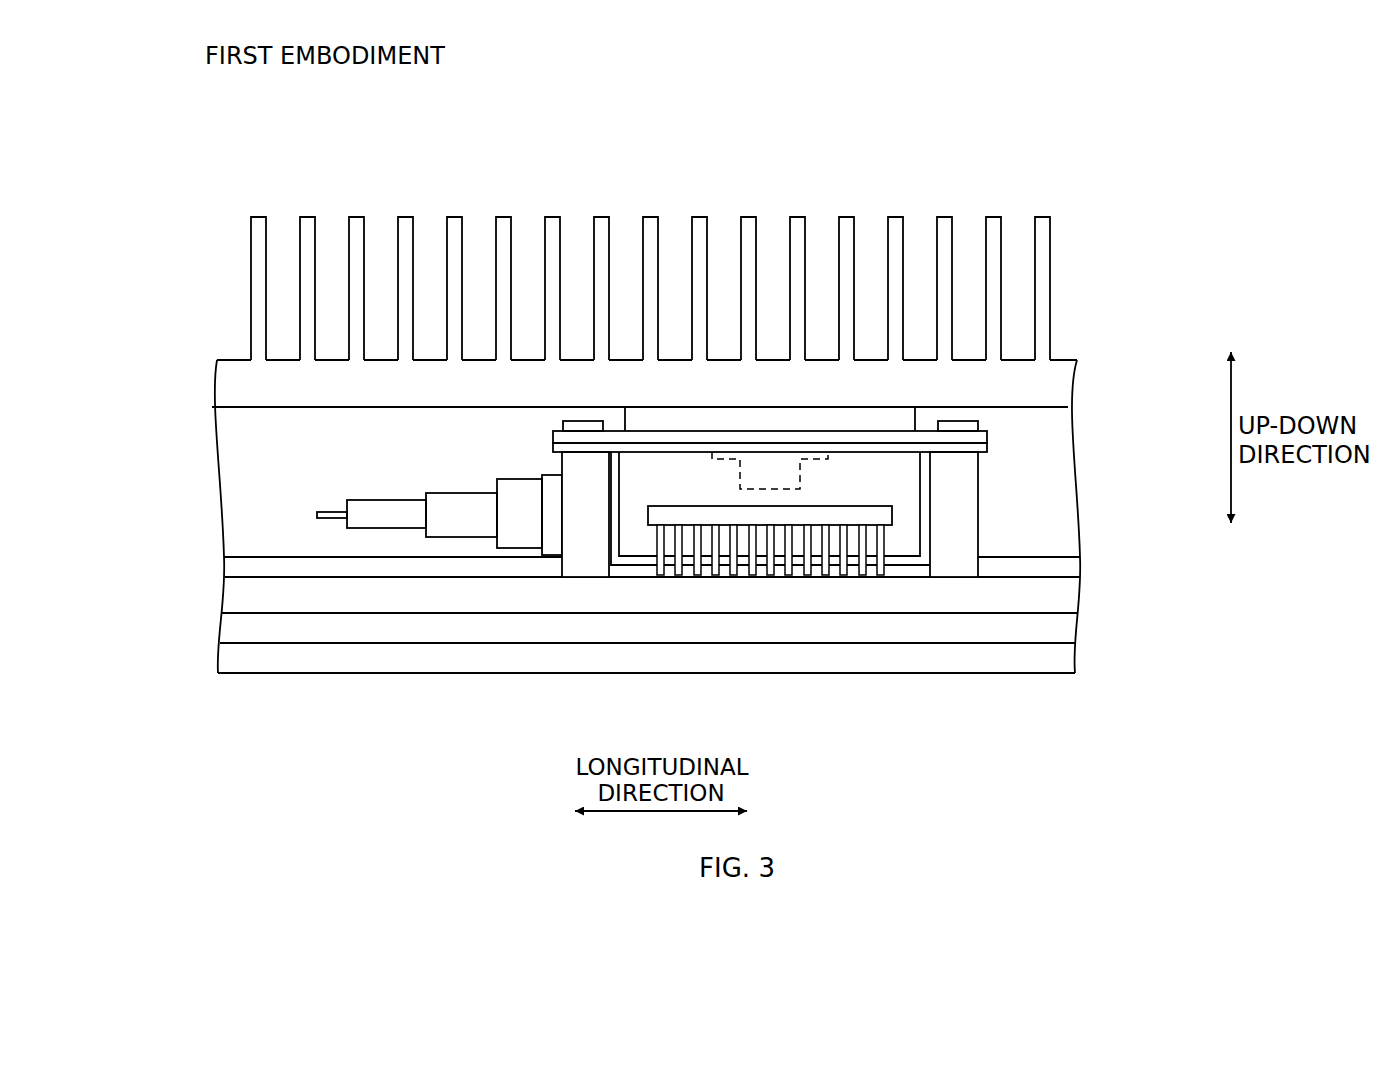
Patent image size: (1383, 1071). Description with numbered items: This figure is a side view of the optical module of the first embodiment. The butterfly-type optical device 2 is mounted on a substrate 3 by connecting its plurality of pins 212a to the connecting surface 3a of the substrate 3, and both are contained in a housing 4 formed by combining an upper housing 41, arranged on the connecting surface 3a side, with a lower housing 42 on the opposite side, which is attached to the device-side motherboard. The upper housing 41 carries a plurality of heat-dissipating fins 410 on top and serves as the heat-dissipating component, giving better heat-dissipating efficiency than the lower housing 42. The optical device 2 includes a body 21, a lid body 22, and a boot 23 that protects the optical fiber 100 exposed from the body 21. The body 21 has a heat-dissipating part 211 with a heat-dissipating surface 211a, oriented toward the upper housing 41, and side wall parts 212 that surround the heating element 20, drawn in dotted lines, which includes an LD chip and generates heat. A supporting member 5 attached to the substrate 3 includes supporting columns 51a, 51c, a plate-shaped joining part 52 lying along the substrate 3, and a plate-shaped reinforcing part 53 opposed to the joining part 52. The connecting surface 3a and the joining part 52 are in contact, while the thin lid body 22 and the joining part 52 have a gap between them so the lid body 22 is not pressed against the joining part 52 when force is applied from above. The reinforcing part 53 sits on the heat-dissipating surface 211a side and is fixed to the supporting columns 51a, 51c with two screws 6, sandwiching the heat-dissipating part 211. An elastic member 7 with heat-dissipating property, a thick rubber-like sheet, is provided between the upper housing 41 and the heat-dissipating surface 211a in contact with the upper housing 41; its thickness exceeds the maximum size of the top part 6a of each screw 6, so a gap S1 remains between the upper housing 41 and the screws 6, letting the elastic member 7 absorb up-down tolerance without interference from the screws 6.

The optical device 2 is at (477, 470).
The substrate 3 is at (1063, 593).
The connecting surface 3a is at (1030, 575).
The housing 4 is at (103, 490).
The upper housing 41 is at (190, 445).
The heat-dissipating fins 410 is at (698, 225).
The lower housing 42 is at (193, 633).
The supporting member 5 is at (952, 587).
The supporting column 51a is at (580, 548).
The supporting column 51c is at (968, 520).
The joining part 52 is at (903, 565).
The reinforcing part 53 is at (555, 438).
The screw 6 is at (592, 420).
The top part of screw 6a is at (581, 425).
The elastic member 7 is at (721, 415).
The heating element 20 is at (700, 469).
The body 21 is at (1137, 440).
The heat-dissipating part 211 is at (982, 448).
The heat-dissipating surface 211a is at (808, 445).
The side wall parts 212 is at (900, 482).
The pins 212a is at (760, 575).
The lid body 22 is at (642, 560).
The boot 23 is at (406, 540).
The optical fiber 100 is at (331, 512).
The gap S1 is at (562, 413).